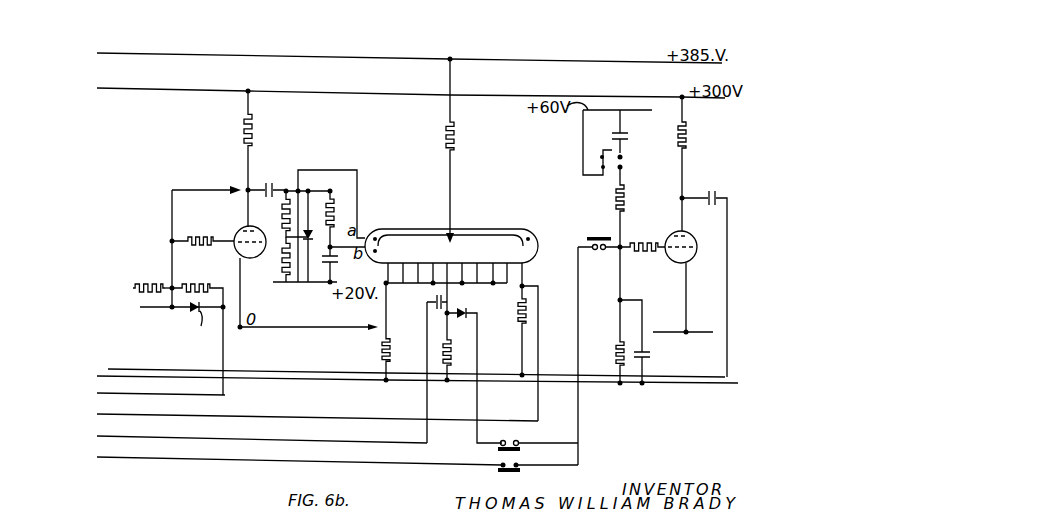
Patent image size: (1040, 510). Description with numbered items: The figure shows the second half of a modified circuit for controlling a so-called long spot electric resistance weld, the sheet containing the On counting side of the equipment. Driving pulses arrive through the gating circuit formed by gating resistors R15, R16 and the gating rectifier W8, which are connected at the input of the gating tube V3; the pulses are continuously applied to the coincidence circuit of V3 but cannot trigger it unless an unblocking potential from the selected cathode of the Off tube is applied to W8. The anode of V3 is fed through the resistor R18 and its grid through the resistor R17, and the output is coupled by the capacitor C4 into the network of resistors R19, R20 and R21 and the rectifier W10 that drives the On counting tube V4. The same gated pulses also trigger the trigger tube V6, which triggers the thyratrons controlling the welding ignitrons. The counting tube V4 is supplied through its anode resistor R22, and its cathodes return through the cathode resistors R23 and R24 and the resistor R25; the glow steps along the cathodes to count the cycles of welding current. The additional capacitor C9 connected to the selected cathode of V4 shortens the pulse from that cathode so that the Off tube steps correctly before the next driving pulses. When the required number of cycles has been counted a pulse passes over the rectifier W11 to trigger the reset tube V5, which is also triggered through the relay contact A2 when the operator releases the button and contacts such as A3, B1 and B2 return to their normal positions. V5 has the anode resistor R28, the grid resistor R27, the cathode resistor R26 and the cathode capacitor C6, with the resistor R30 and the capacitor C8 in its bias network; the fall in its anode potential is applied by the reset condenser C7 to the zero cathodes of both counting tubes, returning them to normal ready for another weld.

The trigger tube V6 is at (207, 175).
The resistor R18 is at (265, 159).
The resistor R17 is at (203, 233).
The gating resistor R15 is at (152, 277).
The gating resistor R16 is at (197, 329).
The gating rectifier W8 is at (199, 322).
The gating tube V3 is at (246, 235).
The capacitor C4 is at (267, 178).
The resistor R19 is at (280, 214).
The resistor R20 is at (270, 259).
The rectifier W10 is at (307, 253).
The resistor R21 is at (331, 227).
The anode resistor R22 is at (467, 151).
The On counting tube V4 is at (451, 316).
The cathode resistor R23 is at (397, 333).
The capacitor C9 is at (423, 367).
The cathode resistor R24 is at (457, 333).
The rectifier W11 is at (474, 366).
The resistor R25 is at (505, 332).
The relay contact A2 is at (538, 437).
The relay contact A3 is at (509, 478).
The relay contact B1 is at (599, 342).
The grid resistor R27 is at (642, 237).
The reset tube V5 is at (683, 276).
The anode resistor R28 is at (699, 164).
The reset condenser C7 is at (706, 272).
The capacitor C8 is at (633, 131).
The relay contact B2 is at (635, 165).
The resistor R30 is at (639, 234).
The cathode resistor R26 is at (607, 342).
The cathode capacitor C6 is at (647, 343).